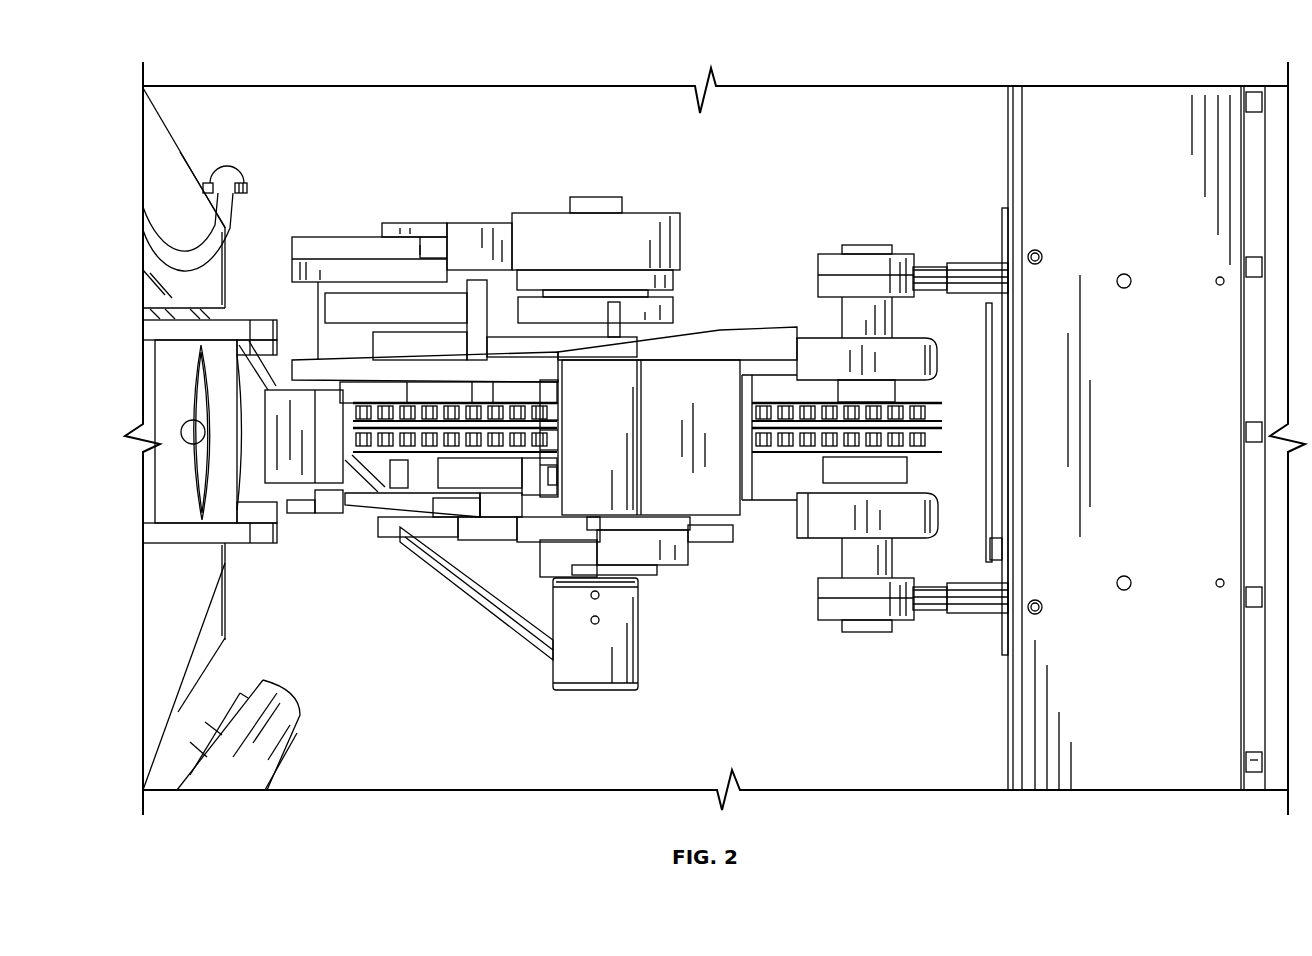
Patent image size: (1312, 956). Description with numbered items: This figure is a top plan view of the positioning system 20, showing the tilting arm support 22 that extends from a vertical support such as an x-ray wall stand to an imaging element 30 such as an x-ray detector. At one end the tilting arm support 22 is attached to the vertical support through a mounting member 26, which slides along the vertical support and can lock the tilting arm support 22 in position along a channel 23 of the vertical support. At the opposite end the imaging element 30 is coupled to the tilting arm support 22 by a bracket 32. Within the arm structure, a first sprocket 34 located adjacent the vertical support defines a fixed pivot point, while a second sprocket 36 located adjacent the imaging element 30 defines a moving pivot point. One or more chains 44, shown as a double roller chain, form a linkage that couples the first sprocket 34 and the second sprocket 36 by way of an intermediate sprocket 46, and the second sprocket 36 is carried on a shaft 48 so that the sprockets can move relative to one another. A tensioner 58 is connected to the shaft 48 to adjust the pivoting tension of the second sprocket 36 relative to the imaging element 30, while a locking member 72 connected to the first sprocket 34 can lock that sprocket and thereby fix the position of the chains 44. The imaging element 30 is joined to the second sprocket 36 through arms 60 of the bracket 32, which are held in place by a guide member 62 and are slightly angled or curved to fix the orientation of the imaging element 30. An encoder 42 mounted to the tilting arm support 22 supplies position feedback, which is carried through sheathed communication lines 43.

The positioning system 20 is at (926, 688).
The tilting arm support 22 is at (398, 722).
The channel 23 is at (156, 506).
The mounting member 26 is at (250, 548).
The imaging element 30 is at (1093, 806).
The bracket 32 is at (976, 614).
The first sprocket 34 is at (410, 440).
The second sprocket 36 is at (812, 455).
The encoder 42 is at (565, 672).
The communication lines 43 is at (490, 598).
The chains 44 is at (365, 447).
The intermediate sprocket 46 is at (425, 405).
The shaft 48 is at (848, 327).
The tensioner 58 is at (628, 226).
The arms 60 is at (916, 276).
The guide member 62 is at (917, 348).
The locking member 72 is at (470, 226).